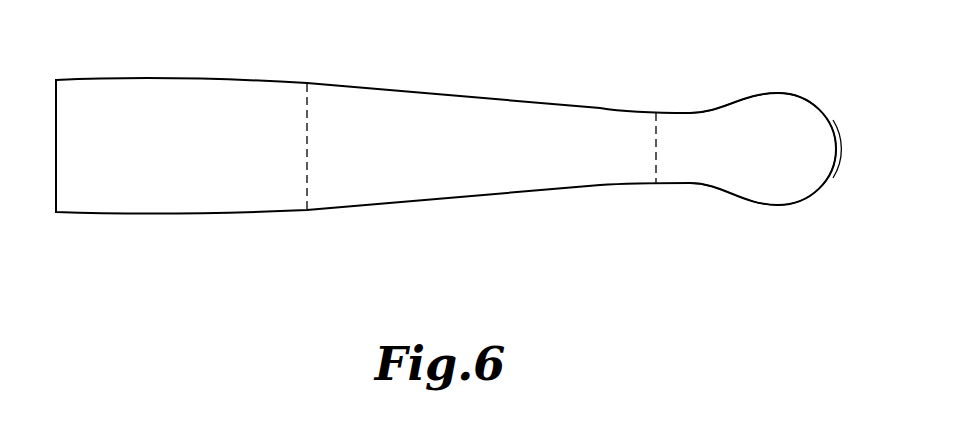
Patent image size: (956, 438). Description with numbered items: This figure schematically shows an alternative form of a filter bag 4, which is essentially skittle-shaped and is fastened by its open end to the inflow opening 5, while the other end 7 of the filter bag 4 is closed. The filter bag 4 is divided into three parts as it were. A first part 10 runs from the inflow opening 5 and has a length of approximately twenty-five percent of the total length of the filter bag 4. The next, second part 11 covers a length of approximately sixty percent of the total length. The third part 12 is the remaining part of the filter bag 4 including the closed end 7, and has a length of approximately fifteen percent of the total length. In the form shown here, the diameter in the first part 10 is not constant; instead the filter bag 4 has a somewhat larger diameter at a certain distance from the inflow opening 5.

The filter bag 4 is at (597, 223).
The inflow opening 5 is at (57, 136).
The closed end 7 is at (843, 162).
The first part 10 is at (222, 120).
The second part 11 is at (432, 143).
The third part 12 is at (760, 145).